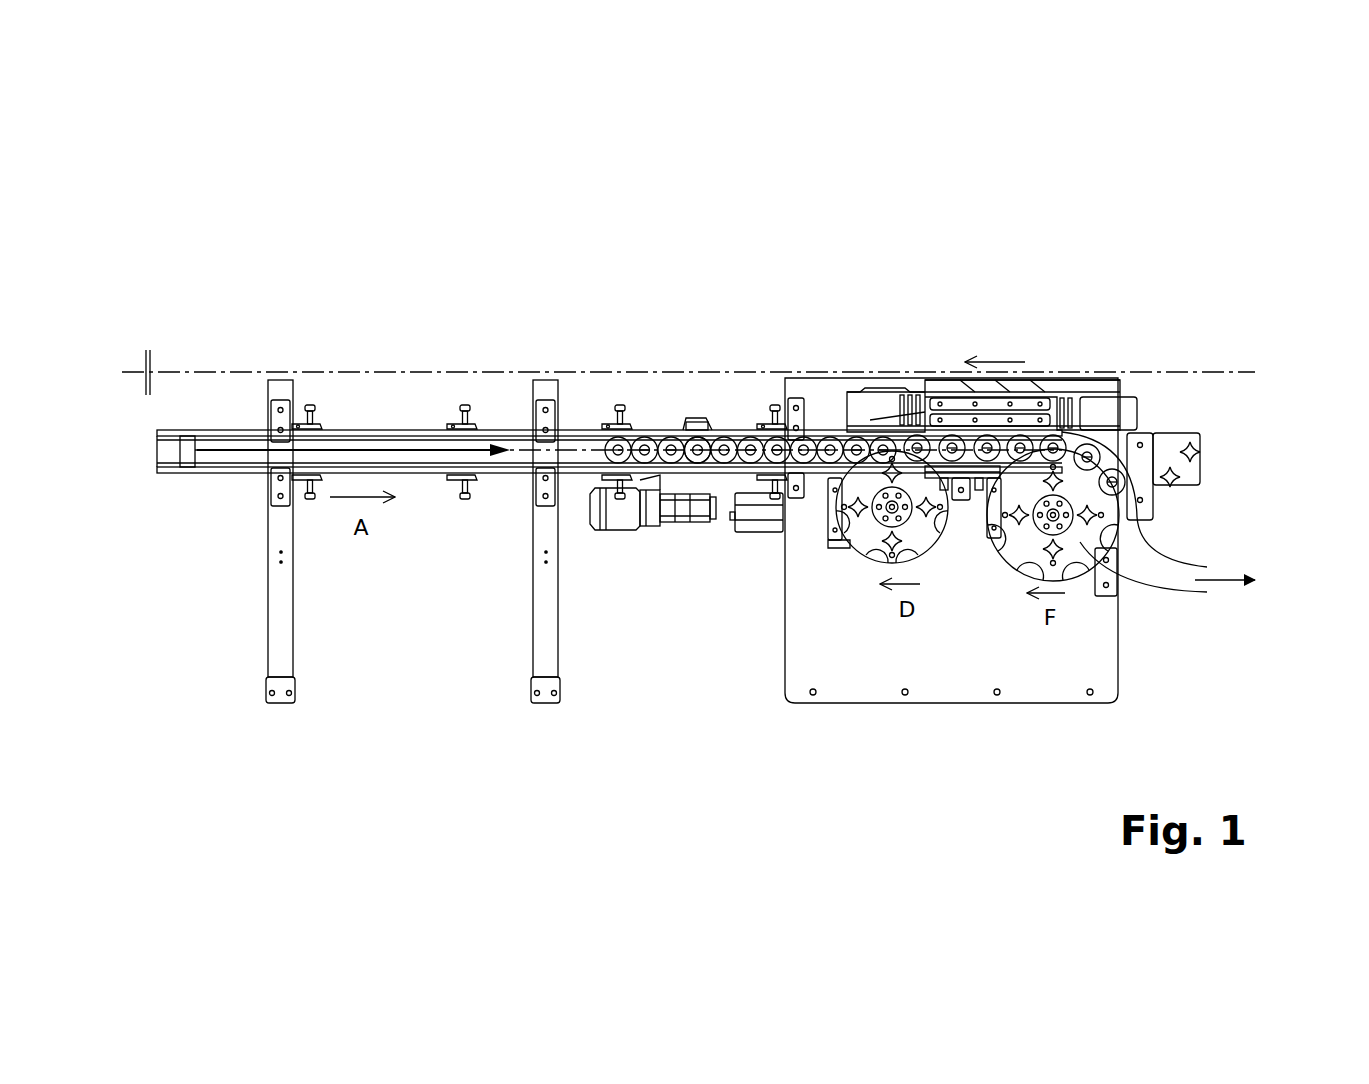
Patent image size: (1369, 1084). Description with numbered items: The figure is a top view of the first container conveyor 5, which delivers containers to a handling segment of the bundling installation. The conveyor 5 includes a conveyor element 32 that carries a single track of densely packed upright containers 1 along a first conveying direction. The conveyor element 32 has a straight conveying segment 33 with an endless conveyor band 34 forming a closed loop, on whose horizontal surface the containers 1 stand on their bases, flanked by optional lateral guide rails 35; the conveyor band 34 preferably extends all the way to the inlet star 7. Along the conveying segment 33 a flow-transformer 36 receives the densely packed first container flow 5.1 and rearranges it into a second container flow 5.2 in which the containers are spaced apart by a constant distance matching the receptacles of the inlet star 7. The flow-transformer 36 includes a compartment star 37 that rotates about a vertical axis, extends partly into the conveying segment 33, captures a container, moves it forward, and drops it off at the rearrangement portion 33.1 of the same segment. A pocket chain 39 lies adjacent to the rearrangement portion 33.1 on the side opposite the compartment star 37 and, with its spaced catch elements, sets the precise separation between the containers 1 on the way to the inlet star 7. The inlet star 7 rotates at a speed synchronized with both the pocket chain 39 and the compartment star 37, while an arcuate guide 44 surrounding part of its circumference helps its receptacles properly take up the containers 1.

The first container conveyor 5 is at (445, 262).
The pocket chain 39 is at (905, 363).
The lateral guide rails 35 is at (217, 460).
The conveyor band 34 is at (340, 450).
The first container flow 5.1 is at (655, 435).
The containers 1 is at (700, 436).
The second container flow 5.2 is at (1110, 443).
The straight conveying segment 33 is at (183, 456).
The conveyor element 32 is at (413, 541).
The flow-transformer 36 is at (783, 715).
The compartment star 37 is at (878, 543).
The rearrangement portion 33.1 is at (961, 505).
The inlet star 7 is at (1068, 547).
The arcuate guide 44 is at (1140, 490).